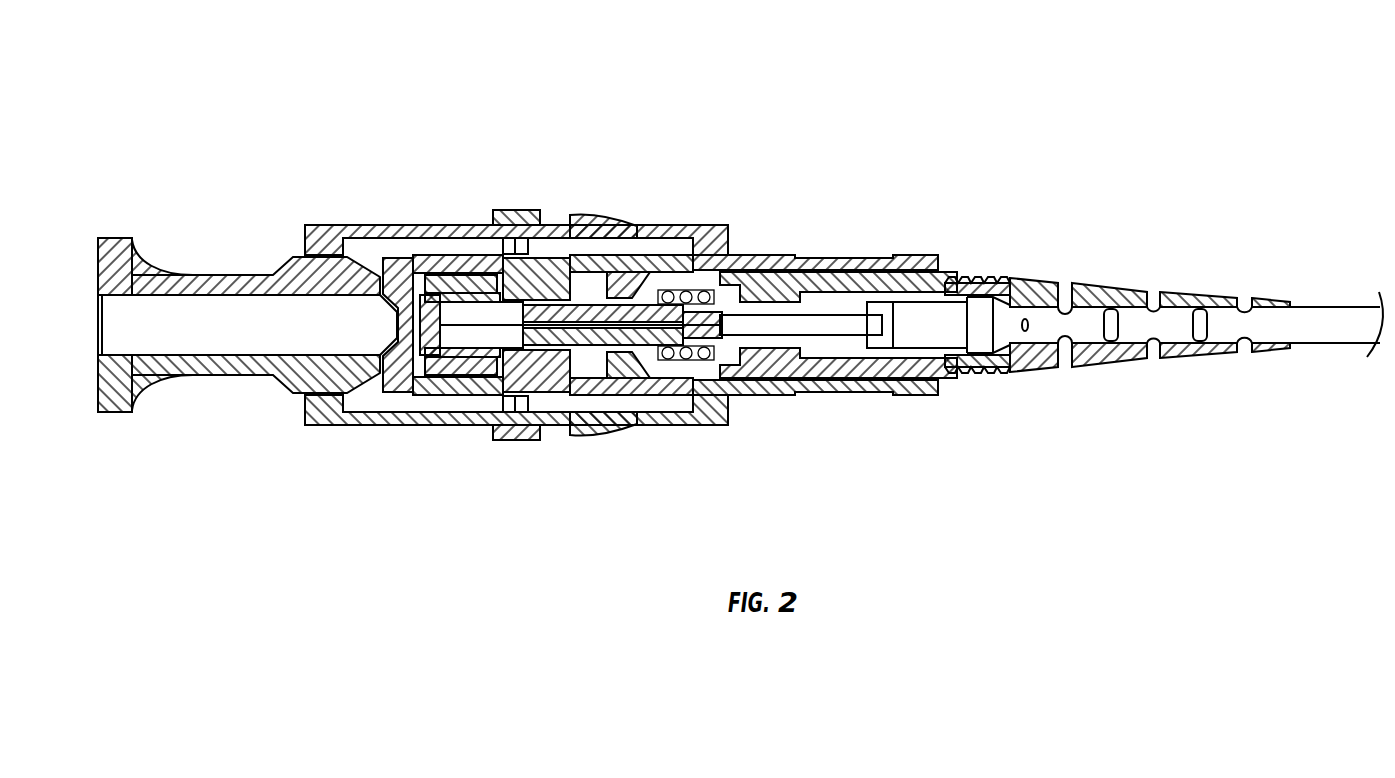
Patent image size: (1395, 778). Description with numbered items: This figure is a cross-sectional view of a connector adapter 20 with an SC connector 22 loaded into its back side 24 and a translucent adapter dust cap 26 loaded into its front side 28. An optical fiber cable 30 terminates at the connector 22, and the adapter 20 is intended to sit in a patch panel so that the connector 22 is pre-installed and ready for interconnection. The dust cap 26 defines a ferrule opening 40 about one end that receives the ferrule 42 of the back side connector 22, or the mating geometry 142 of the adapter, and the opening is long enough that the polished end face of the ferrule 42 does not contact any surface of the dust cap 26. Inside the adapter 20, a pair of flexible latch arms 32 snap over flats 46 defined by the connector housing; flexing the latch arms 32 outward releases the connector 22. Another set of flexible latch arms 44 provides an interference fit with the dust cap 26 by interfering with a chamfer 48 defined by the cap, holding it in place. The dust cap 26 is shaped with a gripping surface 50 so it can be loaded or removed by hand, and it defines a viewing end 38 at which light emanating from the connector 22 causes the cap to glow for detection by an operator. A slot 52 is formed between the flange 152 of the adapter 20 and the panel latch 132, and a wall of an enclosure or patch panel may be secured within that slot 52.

The connector adapter 20 is at (635, 220).
The connector 22 is at (836, 222).
The back side 24 is at (748, 222).
The translucent adapter dust cap 26 is at (214, 273).
The front side 28 is at (305, 227).
The optical fiber cable 30 is at (1327, 316).
The flexible latch arms 32 is at (568, 215).
The viewing end 38 is at (93, 384).
The ferrule opening 40 is at (462, 328).
The ferrule 42 is at (552, 356).
The flexible latch arms 44 is at (407, 256).
The flats 46 is at (627, 374).
The chamfer 48 is at (400, 262).
The gripping surface 50 is at (173, 240).
The slot 52 is at (549, 204).
The panel latch 132 is at (595, 220).
The mating geometry 142 is at (447, 342).
The flange 152 is at (537, 347).